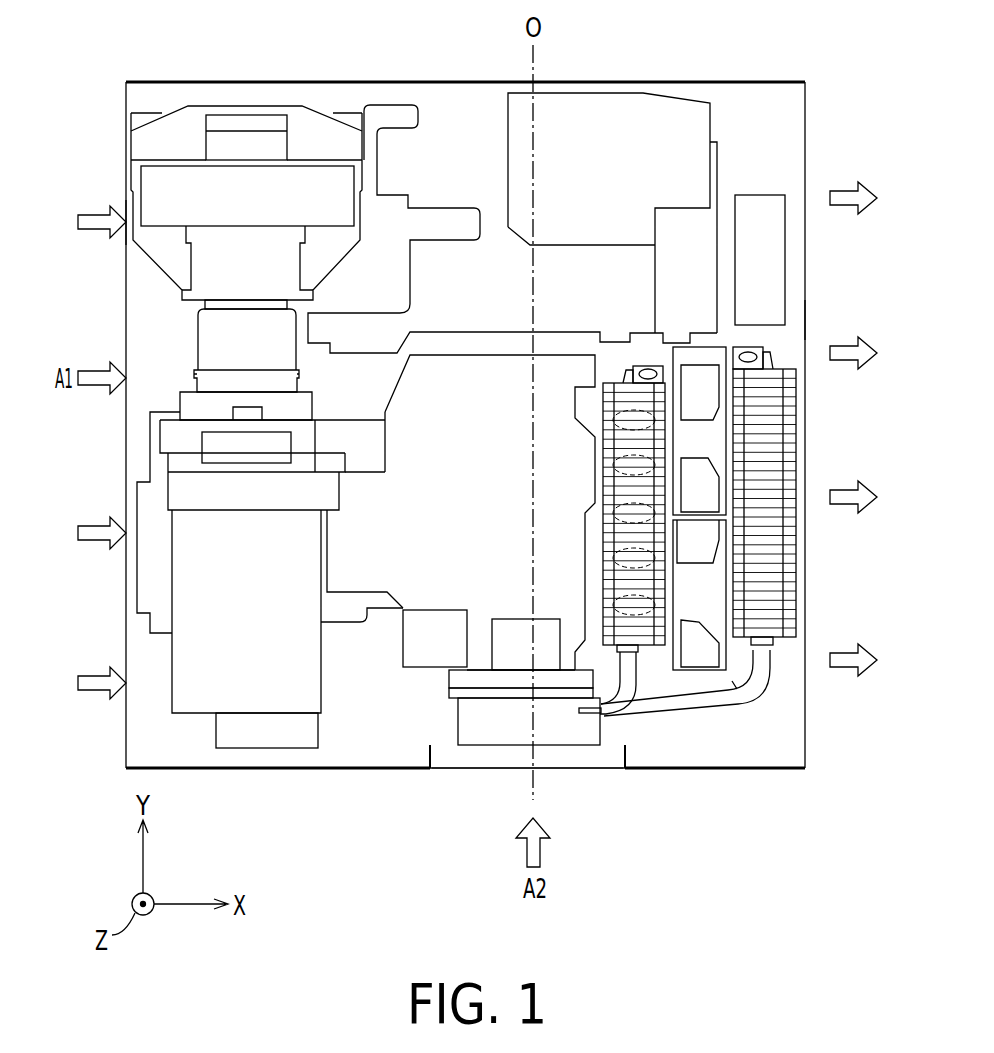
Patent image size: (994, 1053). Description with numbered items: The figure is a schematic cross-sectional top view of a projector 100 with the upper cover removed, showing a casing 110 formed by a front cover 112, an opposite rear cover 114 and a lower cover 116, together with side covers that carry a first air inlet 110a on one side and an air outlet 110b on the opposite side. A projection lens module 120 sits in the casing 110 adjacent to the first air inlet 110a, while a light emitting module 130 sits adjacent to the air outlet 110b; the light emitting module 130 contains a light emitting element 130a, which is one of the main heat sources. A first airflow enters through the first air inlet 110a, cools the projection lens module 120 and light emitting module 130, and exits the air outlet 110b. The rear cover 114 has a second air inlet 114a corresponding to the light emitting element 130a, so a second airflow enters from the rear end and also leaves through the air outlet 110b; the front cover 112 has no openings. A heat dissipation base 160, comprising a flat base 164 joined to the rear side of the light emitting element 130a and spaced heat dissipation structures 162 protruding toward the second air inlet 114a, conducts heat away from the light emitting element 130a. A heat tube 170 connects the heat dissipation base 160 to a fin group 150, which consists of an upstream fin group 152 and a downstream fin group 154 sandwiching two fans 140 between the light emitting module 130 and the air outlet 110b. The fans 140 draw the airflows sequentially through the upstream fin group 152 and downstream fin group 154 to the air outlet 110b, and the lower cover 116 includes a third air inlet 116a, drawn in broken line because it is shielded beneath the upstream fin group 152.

The projector 100 is at (848, 866).
The casing 110 is at (126, 738).
The first air inlet 110a is at (117, 343).
The air outlet 110b is at (815, 321).
The front cover 112 is at (662, 81).
The rear cover 114 is at (708, 770).
The second air inlet 114a is at (491, 778).
The lower cover 116 is at (775, 155).
The third air inlet 116a is at (658, 393).
The projection lens module 120 is at (243, 180).
The light emitting module 130 is at (466, 377).
The light emitting element 130a is at (578, 660).
The fan 140 is at (715, 440).
The fin group 150 is at (748, 510).
The upstream fin group 152 is at (657, 582).
The downstream fin group 154 is at (773, 592).
The heat dissipation base 160 is at (454, 759).
The heat dissipation structures 162 is at (463, 715).
The base 164 is at (448, 693).
The heat tube 170 is at (760, 668).